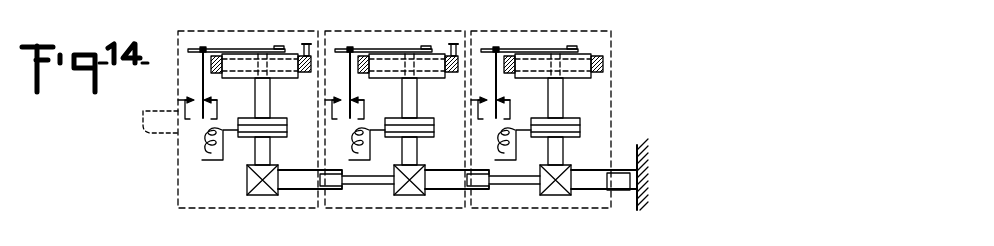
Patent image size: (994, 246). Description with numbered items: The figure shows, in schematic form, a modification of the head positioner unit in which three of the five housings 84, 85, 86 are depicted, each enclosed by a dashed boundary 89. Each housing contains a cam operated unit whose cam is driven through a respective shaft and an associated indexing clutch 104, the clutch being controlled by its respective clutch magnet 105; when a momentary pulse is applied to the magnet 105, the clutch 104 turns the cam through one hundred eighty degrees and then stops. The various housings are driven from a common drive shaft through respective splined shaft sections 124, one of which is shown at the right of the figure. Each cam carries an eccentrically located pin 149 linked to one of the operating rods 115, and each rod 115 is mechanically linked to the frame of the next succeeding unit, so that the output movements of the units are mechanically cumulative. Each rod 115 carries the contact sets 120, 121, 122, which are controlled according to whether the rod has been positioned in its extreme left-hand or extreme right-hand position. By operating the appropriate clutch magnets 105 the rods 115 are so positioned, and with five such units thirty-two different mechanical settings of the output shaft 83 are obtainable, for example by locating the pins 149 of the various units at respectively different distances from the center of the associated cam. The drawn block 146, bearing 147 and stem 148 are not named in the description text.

The operating rod 115 is at (190, 48).
The bearing 147 is at (215, 57).
The carriage block 146 is at (238, 62).
The pin 149 is at (280, 46).
The contact set 120 is at (203, 68).
The contact set 122 is at (180, 100).
The contact set 121 is at (218, 117).
The piston rod 148 is at (270, 98).
The clutch magnet 105 is at (208, 135).
The indexing clutch 104 is at (246, 138).
The output shaft 83 is at (153, 135).
The unit boundary 89 is at (192, 211).
The housing 86 is at (252, 235).
The housing 85 is at (407, 235).
The housing 84 is at (544, 235).
The splined shaft section 124 is at (615, 178).